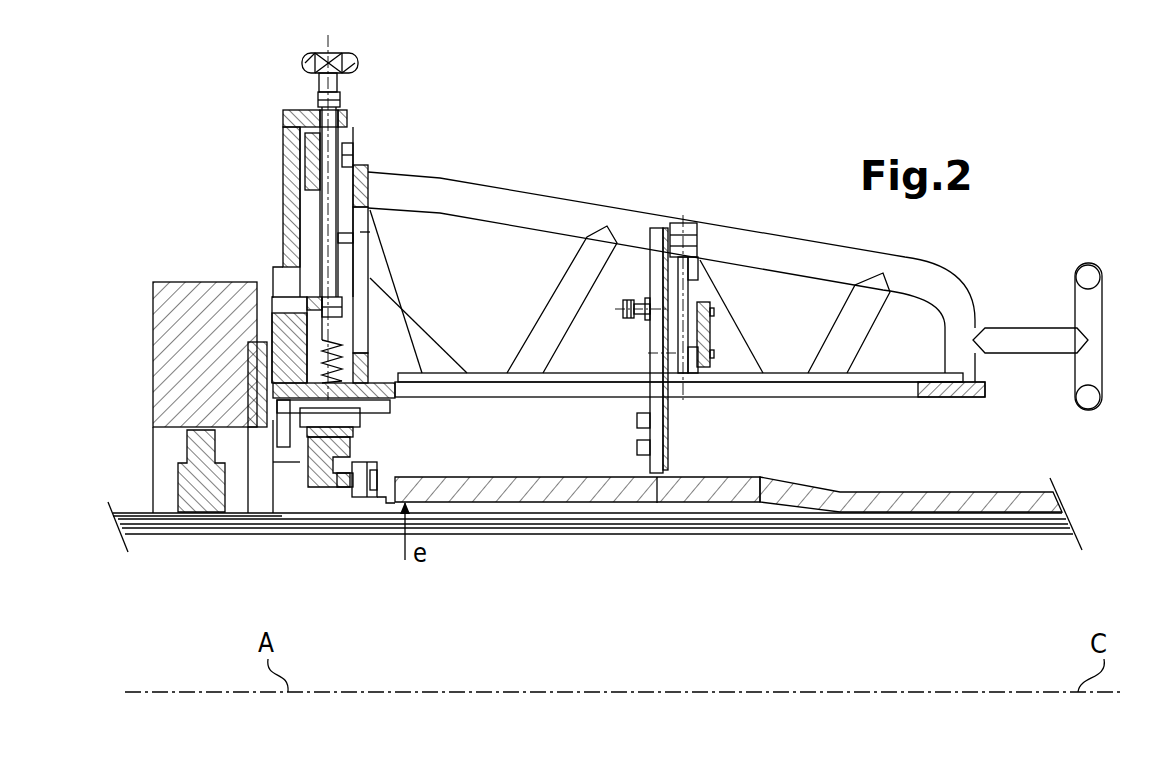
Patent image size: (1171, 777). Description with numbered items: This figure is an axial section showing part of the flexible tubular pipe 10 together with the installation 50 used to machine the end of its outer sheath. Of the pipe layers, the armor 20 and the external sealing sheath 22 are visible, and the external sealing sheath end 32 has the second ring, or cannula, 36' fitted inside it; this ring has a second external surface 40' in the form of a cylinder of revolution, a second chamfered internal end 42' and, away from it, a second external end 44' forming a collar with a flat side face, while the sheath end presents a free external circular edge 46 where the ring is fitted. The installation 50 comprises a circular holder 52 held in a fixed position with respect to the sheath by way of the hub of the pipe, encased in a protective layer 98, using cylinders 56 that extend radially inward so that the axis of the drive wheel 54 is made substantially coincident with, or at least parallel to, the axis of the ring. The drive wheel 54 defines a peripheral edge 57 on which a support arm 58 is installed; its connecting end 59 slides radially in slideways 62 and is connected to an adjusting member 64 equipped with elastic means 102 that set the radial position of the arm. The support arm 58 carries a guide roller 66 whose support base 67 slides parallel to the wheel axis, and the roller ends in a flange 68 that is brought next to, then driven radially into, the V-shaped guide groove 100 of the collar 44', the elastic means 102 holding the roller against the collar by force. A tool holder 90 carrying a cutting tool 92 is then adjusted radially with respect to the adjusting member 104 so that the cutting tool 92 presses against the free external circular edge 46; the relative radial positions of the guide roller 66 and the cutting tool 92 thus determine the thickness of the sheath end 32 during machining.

The flexible tubular pipe 10 is at (993, 619).
The armor 20 is at (545, 518).
The external sealing sheath 22 is at (935, 498).
The external sealing sheath end 32 is at (492, 485).
The second ring 36' is at (592, 554).
The second external surface 40' is at (589, 457).
The second chamfered internal end 42' is at (599, 565).
The second external end 44' is at (365, 531).
The free external circular edge 46 is at (510, 466).
The installation 50 is at (230, 144).
The circular holder 52 is at (170, 452).
The drive wheel 54 is at (290, 489).
The cylinders 56 is at (178, 497).
The peripheral edge 57 is at (253, 494).
The support arm 58 is at (660, 189).
The connecting end 59 is at (366, 137).
The slideways 62 is at (312, 208).
The adjusting member 64 is at (312, 55).
The guide roller 66 is at (360, 482).
The support base 67 is at (277, 462).
The flange 68 is at (378, 496).
The tool holder 90 is at (658, 440).
The cutting tool 92 is at (658, 503).
The protective layer 98 is at (260, 537).
The guide groove 100 is at (405, 468).
The elastic means 102 is at (368, 360).
The adjusting member 104 is at (625, 312).